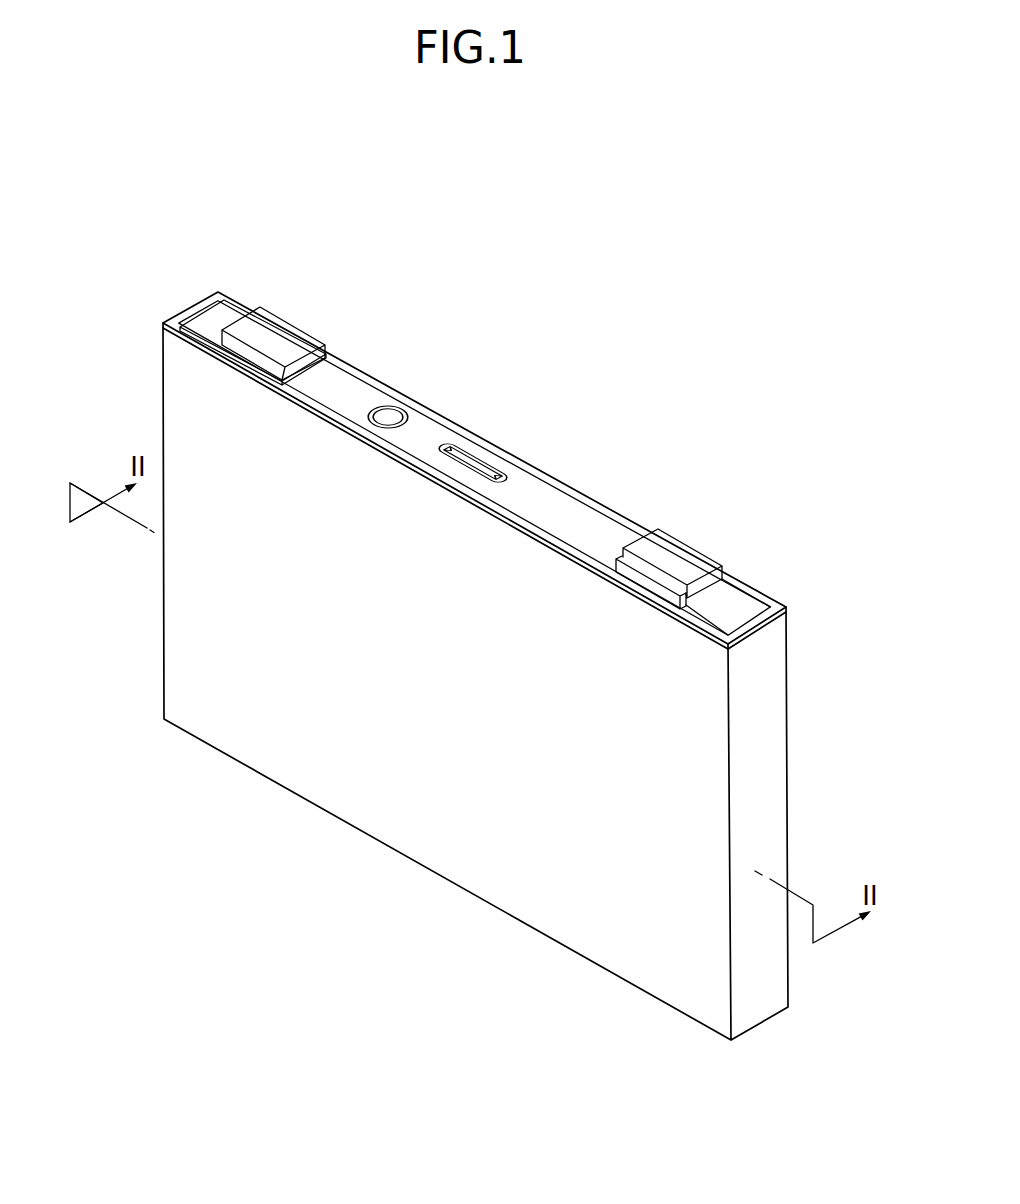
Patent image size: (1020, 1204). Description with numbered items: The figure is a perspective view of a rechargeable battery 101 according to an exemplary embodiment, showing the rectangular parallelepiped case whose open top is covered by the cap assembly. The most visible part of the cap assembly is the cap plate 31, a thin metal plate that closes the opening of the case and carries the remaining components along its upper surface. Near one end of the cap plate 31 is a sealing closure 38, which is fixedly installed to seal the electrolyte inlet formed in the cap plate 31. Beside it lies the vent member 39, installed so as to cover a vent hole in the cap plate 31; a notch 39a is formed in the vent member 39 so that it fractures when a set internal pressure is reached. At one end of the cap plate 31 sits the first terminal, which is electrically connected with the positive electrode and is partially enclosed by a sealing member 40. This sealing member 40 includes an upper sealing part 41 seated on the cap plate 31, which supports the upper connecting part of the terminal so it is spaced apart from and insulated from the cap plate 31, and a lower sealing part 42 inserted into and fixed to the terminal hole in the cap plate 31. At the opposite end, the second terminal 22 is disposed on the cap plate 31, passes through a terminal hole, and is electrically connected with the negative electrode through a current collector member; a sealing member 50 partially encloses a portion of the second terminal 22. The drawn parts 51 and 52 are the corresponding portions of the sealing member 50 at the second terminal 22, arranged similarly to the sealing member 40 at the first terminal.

The rechargeable battery 101 is at (462, 251).
The second terminal 22 is at (678, 549).
The cap plate 31 is at (426, 424).
The sealing closure 38 is at (390, 405).
The vent member 39 is at (507, 431).
The notch 39a is at (470, 453).
The sealing member 40 is at (276, 307).
The upper sealing part 41 is at (316, 360).
The lower sealing part 42 is at (230, 313).
The sealing member 50 is at (713, 538).
The second terminal block 51 is at (616, 560).
The second insulating plate 52 is at (735, 596).